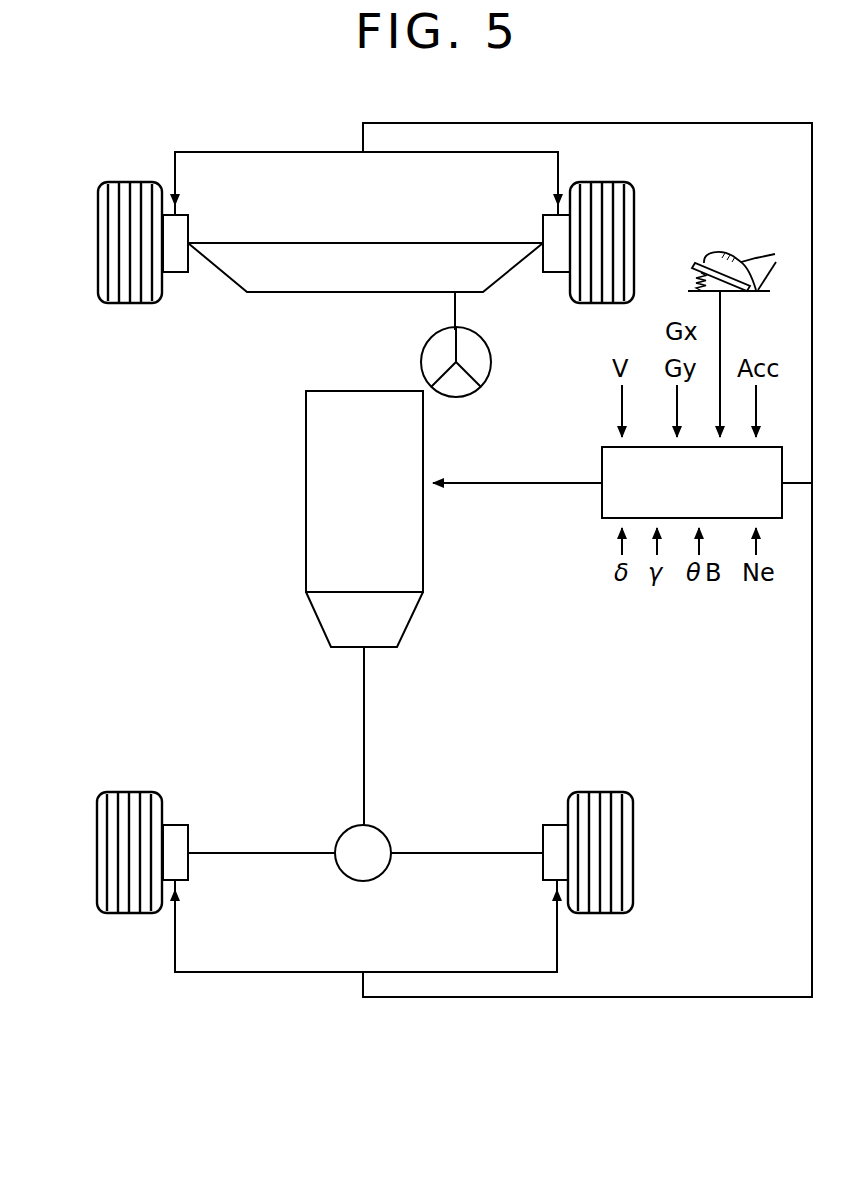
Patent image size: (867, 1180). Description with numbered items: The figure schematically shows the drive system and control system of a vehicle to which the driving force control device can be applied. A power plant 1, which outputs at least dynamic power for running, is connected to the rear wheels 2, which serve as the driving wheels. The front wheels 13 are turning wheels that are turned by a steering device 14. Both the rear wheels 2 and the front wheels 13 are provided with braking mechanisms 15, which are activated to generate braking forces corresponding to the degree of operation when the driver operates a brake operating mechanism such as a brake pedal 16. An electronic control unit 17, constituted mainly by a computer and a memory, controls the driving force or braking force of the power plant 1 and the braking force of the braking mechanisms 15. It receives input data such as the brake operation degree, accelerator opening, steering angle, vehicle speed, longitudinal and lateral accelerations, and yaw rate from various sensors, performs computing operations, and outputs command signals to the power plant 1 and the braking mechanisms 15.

The power plant 1 is at (306, 494).
The driving wheels 2 is at (122, 792).
The front wheels 13 is at (98, 192).
The steering device 14 is at (432, 314).
The braking mechanisms 15 is at (180, 272).
The brake pedal 16 is at (693, 267).
The electronic control unit 17 is at (602, 453).